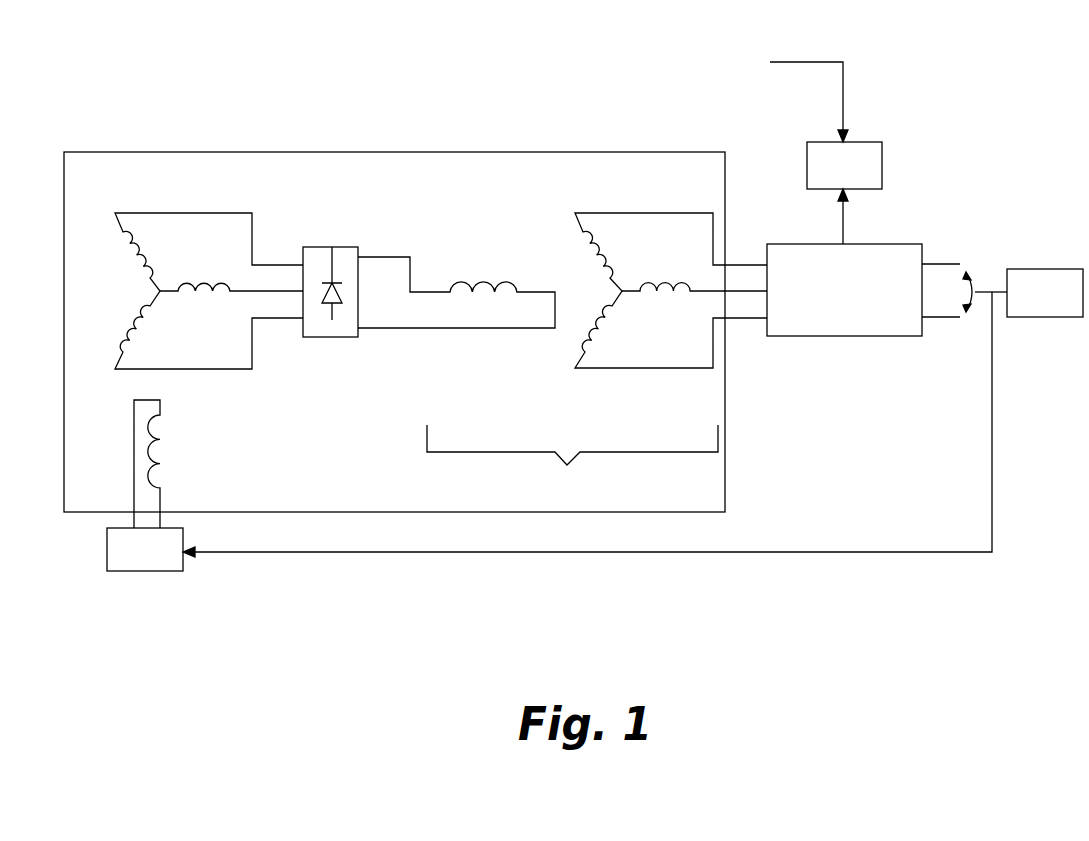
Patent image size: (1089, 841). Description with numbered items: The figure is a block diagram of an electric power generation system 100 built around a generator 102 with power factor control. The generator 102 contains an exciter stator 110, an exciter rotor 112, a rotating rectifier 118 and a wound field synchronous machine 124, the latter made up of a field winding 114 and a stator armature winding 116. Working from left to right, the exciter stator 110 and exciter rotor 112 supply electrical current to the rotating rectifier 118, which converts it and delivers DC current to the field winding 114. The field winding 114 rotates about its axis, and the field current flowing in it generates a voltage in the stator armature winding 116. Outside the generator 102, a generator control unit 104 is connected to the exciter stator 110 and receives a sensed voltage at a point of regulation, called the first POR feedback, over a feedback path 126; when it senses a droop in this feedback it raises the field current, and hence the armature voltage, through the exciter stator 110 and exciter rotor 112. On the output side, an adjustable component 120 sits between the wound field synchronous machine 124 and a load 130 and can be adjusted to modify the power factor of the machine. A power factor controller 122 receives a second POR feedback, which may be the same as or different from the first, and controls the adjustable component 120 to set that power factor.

The electric power generation system 100 is at (95, 39).
The generator 102 is at (179, 152).
The generator control unit 104 is at (168, 574).
The exciter stator 110 is at (134, 437).
The exciter rotor 112 is at (252, 345).
The field winding 114 is at (496, 333).
The stator armature winding 116 is at (600, 212).
The rotating rectifier 118 is at (333, 320).
The adjustable component 120 is at (885, 338).
The power factor controller 122 is at (872, 139).
The wound field synchronous machine 124 is at (572, 460).
The feedback path 126 is at (626, 567).
The load 130 is at (1031, 264).